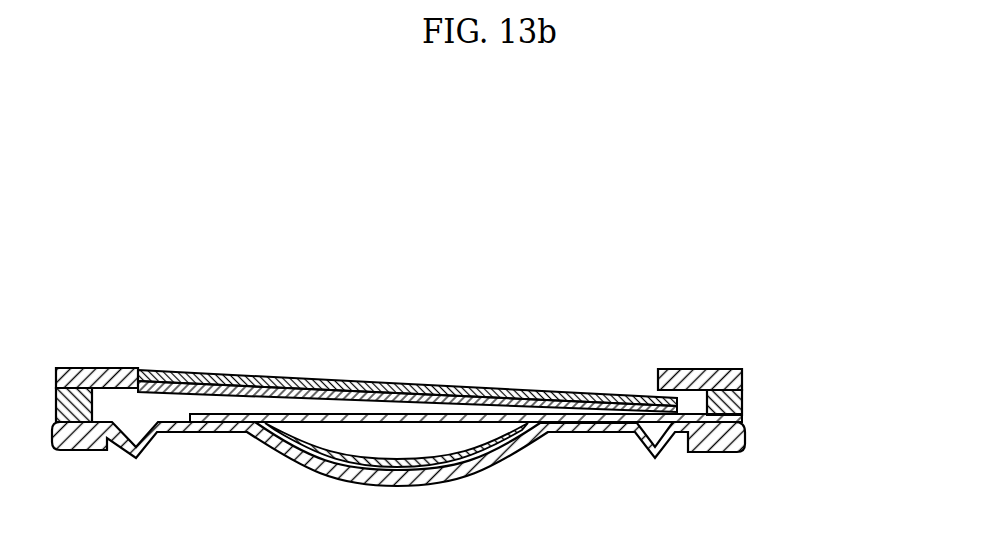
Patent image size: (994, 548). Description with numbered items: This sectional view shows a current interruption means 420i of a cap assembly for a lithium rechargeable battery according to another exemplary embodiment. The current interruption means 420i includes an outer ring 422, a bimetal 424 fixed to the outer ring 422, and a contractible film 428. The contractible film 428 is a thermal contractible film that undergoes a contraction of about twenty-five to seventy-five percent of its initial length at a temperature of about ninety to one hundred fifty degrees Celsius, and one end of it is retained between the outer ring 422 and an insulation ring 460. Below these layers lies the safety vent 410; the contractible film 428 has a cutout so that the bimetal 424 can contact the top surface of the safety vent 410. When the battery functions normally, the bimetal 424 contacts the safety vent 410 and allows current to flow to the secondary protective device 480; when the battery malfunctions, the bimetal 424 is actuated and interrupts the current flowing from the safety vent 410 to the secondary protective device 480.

The safety vent 410 is at (742, 448).
The current interruption means 420i is at (78, 222).
The outer ring 422 is at (80, 368).
The bimetal 424 is at (167, 370).
The contractible film 428 is at (270, 412).
The insulation ring 460 is at (742, 398).
The secondary protective device 480 is at (720, 368).